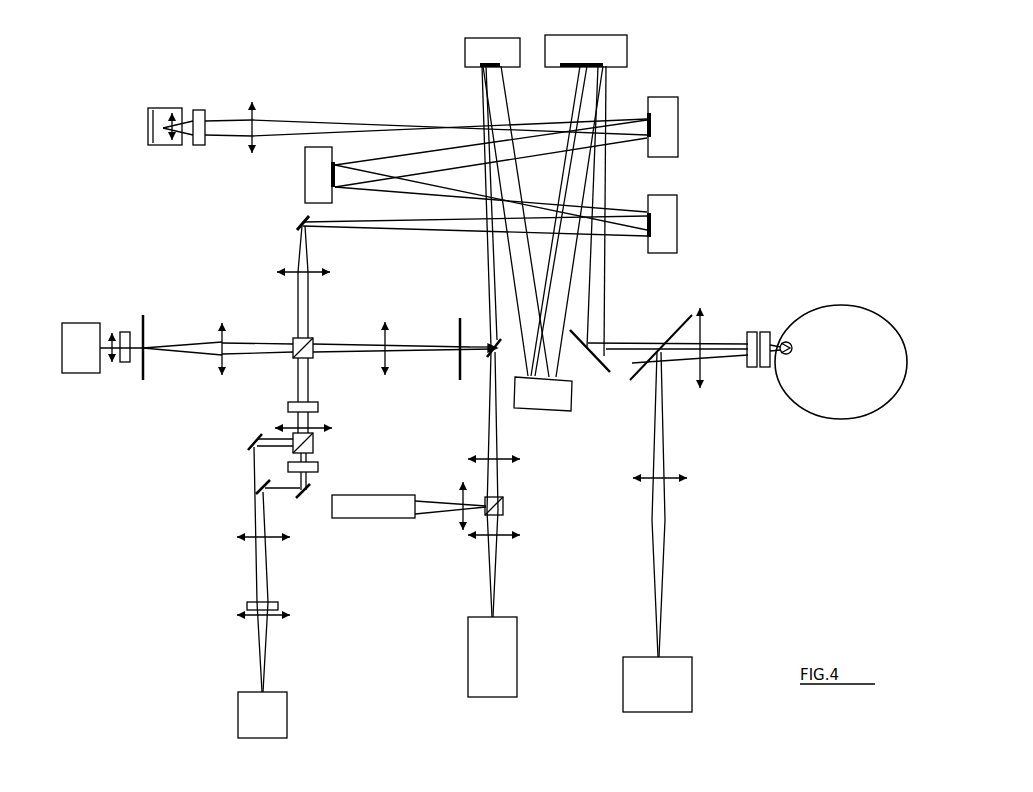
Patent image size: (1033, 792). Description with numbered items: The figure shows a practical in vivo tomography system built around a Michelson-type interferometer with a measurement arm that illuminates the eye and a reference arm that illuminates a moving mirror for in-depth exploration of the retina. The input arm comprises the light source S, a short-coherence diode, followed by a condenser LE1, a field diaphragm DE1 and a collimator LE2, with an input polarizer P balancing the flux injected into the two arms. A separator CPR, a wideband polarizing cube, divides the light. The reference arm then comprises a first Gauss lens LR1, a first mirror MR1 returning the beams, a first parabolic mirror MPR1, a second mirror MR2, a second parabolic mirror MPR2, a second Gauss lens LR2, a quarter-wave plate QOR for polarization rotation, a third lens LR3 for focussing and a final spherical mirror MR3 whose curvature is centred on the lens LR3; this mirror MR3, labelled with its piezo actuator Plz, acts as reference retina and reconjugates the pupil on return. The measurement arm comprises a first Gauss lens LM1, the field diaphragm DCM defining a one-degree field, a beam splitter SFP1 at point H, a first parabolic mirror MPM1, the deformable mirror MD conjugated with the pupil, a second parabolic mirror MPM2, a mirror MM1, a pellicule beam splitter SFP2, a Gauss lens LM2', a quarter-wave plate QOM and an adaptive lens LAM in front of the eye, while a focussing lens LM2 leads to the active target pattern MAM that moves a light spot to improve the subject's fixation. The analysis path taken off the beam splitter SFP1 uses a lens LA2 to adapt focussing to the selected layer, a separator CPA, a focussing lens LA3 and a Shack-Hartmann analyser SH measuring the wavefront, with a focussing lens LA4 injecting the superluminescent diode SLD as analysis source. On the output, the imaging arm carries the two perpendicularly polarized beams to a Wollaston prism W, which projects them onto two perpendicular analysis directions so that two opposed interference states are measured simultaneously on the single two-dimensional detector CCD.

The spherical mirror MR3 is at (147, 126).
The piezo actuator Plz is at (137, 128).
The third lens LR3 is at (172, 140).
The quarter-wave plate QOR is at (199, 116).
The second Gauss lens LR2 is at (251, 118).
The second mirror MR2 is at (299, 175).
The first mirror MR1 is at (283, 219).
The first Gauss lens LR1 is at (286, 273).
The first parabolic mirror MPM1 is at (467, 52).
The second parabolic mirror MPM2 is at (610, 51).
The second parabolic mirror MPR2 is at (686, 127).
The first parabolic mirror MPR1 is at (686, 224).
The deformable mirror MD is at (543, 405).
The beam splitter SFP1 is at (509, 361).
The hole / crossing point H is at (481, 366).
The field diaphragm DCM is at (455, 336).
The first Gauss lens LM1 is at (386, 360).
The mirror MM1 is at (585, 354).
The pellicule beam splitter SFP2 is at (660, 347).
The Gauss lens LM2' is at (702, 340).
The adaptive lens LAM is at (765, 339).
The quarter-wave plate QOM is at (751, 361).
The focussing lens LM2 is at (678, 481).
The active target pattern MAM is at (657, 684).
The lens LA2 is at (511, 460).
The focussing lens LA4 is at (464, 497).
The separator CPA is at (513, 504).
The focussing lens LA3 is at (511, 538).
The Shack-Hartmann analyser SH is at (492, 657).
The superluminescent diode SLD is at (373, 506).
The light source S is at (81, 348).
The condenser LE1 is at (115, 337).
The input polarizer P is at (125, 361).
The field diaphragm DE1 is at (148, 339).
The collimator LE2 is at (221, 340).
The separator CPR is at (319, 339).
The Wollaston prism W is at (275, 606).
The detector CCD is at (262, 715).